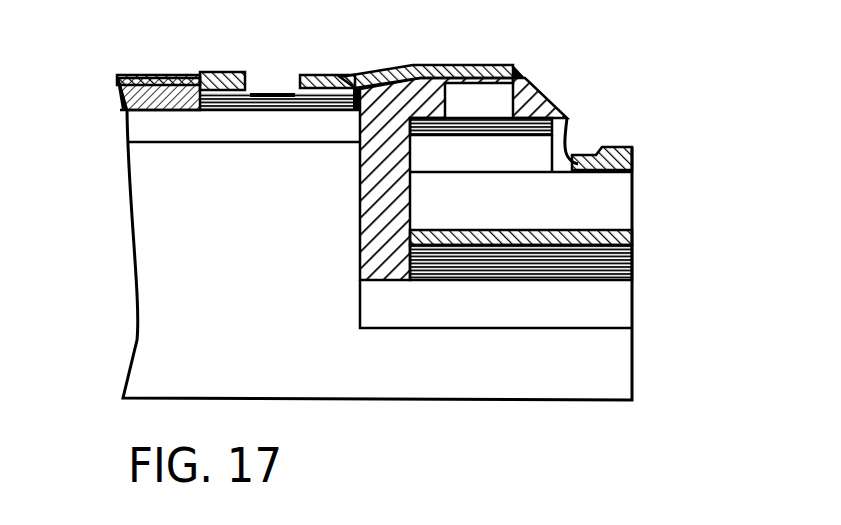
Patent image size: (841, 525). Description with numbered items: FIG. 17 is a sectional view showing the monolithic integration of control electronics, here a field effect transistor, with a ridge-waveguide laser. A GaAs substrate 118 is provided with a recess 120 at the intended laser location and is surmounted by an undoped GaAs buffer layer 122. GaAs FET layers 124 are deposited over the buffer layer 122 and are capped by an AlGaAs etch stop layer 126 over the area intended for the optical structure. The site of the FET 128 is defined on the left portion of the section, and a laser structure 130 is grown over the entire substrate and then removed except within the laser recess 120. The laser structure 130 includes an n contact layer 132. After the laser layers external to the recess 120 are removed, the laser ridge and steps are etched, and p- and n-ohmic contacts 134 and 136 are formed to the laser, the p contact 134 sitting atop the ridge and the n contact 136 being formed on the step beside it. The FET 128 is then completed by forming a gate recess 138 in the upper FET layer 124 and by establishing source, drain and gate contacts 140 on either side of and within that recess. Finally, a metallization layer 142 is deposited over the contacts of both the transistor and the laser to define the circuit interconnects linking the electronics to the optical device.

The GaAs substrate 118 is at (590, 370).
The recess 120 is at (482, 324).
The undoped GaAs buffer layer 122 is at (138, 133).
The GaAs FET layers 124 is at (187, 82).
The AlGaAs etch stop layer 126 is at (630, 238).
The FET 128 is at (272, 70).
The laser structure 130 is at (572, 114).
The n contact layer 132 is at (627, 205).
The p ohmic contact 134 is at (524, 78).
The n ohmic contact 136 is at (568, 138).
The gate recess 138 is at (283, 92).
The source, drain and gate contacts 140 is at (253, 92).
The metallization layer 142 is at (192, 80).